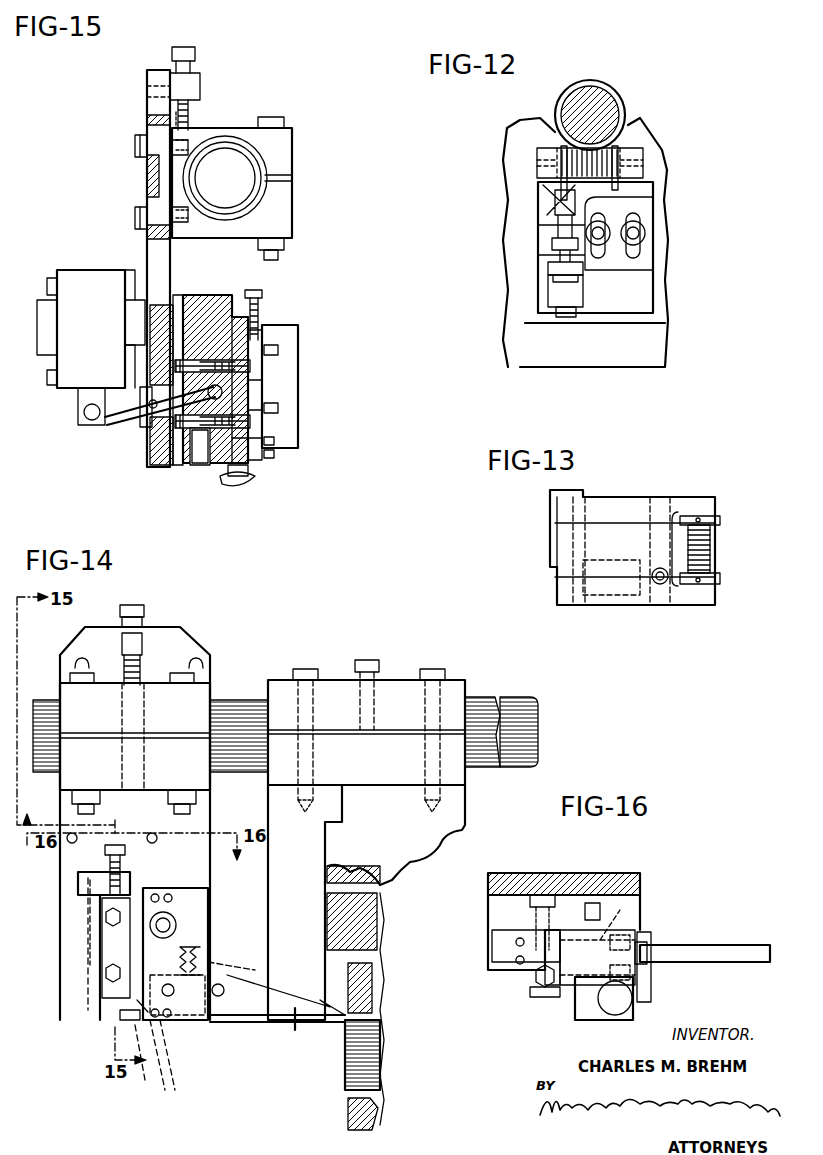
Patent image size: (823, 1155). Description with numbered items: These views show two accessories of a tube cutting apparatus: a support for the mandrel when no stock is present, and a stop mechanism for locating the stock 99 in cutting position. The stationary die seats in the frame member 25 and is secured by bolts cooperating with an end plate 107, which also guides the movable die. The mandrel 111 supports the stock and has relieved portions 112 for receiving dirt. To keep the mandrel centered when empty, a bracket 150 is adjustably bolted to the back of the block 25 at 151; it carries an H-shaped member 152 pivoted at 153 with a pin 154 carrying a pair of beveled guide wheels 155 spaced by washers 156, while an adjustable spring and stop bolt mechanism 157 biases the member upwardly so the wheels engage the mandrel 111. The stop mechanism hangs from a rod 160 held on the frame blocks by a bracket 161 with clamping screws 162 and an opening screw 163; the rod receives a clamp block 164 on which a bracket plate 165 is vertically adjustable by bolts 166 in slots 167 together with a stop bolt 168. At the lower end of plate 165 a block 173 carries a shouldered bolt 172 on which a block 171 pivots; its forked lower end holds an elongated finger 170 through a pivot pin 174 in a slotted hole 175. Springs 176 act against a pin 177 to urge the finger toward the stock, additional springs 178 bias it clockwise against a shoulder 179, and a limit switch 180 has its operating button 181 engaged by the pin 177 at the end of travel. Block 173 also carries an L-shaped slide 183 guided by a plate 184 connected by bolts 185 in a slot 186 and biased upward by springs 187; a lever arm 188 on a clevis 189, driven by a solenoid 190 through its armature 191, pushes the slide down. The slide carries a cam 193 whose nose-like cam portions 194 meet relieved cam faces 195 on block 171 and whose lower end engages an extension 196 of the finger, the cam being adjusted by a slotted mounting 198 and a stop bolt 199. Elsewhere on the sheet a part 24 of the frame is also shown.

In FIG. 14, the bracket 24 is at (278, 808).
In FIG. 12, the frame member 25 is at (542, 128).
In FIG. 14, the frame member 25 is at (398, 852).
In FIG. 15, the stock 99 is at (258, 472).
In FIG. 14, the stock 99 is at (350, 1060).
In FIG. 14, the end plate 107 is at (366, 965).
In FIG. 12, the mandrel 111 is at (590, 98).
In FIG. 12, the relieved portions 112 is at (605, 95).
In FIG. 12, the bracket 150 is at (640, 285).
In FIG. 13, the bracket 150 is at (552, 553).
In FIG. 12, the bolts 151 is at (605, 242).
In FIG. 13, the H-shaped member 152 is at (623, 497).
In FIG. 13, the pivot 153 is at (560, 537).
In FIG. 12, the pin 154 is at (652, 160).
In FIG. 12, the beveled guide wheels 155 is at (570, 165).
In FIG. 13, the beveled guide wheels 155 is at (720, 521).
In FIG. 13, the washers 156 is at (712, 548).
In FIG. 12, the spring and stop bolt mechanism 157 is at (545, 236).
In FIG. 15, the rod 160 is at (224, 162).
In FIG. 14, the rod 160 is at (472, 700).
In FIG. 14, the bracket 161 is at (400, 678).
In FIG. 14, the clamping screws 162 is at (303, 668).
In FIG. 14, the opening screw 163 is at (366, 660).
In FIG. 15, the clamp block 164 is at (284, 145).
In FIG. 14, the clamp block 164 is at (202, 690).
In FIG. 15, the bracket plate 165 is at (148, 74).
In FIG. 14, the bracket plate 165 is at (185, 640).
In FIG. 16, the bracket plate 165 is at (505, 880).
In FIG. 15, the bolts 166 is at (136, 146).
In FIG. 15, the slots 167 is at (152, 132).
In FIG. 15, the stop bolt 168 is at (188, 62).
In FIG. 14, the stop bolt 168 is at (135, 622).
In FIG. 15, the finger 170 is at (248, 487).
In FIG. 14, the finger 170 is at (295, 1030).
In FIG. 16, the finger 170 is at (732, 945).
In FIG. 15, the block 171 is at (240, 440).
In FIG. 14, the block 171 is at (208, 908).
In FIG. 16, the block 171 is at (640, 900).
In FIG. 14, the shouldered bolt 172 is at (170, 918).
In FIG. 16, the shouldered bolt 172 is at (590, 903).
In FIG. 15, the block 173 is at (200, 296).
In FIG. 14, the block 173 is at (210, 928).
In FIG. 16, the block 173 is at (625, 895).
In FIG. 14, the pivot pin 174 is at (172, 994).
In FIG. 14, the slotted hole 175 is at (160, 1016).
In FIG. 14, the springs 176 is at (208, 1015).
In FIG. 16, the springs 176 is at (645, 920).
In FIG. 14, the pin 177 is at (222, 994).
In FIG. 16, the pin 177 is at (650, 945).
In FIG. 14, the springs 178 is at (242, 972).
In FIG. 14, the shoulder 179 is at (172, 1072).
In FIG. 15, the limit switch 180 is at (292, 378).
In FIG. 16, the limit switch 180 is at (632, 1002).
In FIG. 16, the operating button 181 is at (652, 990).
In FIG. 15, the L-shaped slide 183 is at (238, 318).
In FIG. 14, the L-shaped slide 183 is at (80, 878).
In FIG. 16, the L-shaped slide 183 is at (532, 978).
In FIG. 15, the plate 184 is at (180, 466).
In FIG. 16, the plate 184 is at (535, 905).
In FIG. 15, the bolts 185 is at (176, 366).
In FIG. 16, the bolts 185 is at (540, 895).
In FIG. 15, the slot 186 is at (200, 442).
In FIG. 14, the springs 187 is at (88, 940).
In FIG. 15, the lever arm 188 is at (125, 410).
In FIG. 15, the clevis 189 is at (148, 450).
In FIG. 15, the solenoid 190 is at (74, 286).
In FIG. 16, the solenoid 190 is at (580, 1008).
In FIG. 15, the armature 191 is at (85, 392).
In FIG. 15, the cam 193 is at (254, 396).
In FIG. 14, the cam 193 is at (108, 953).
In FIG. 16, the cam 193 is at (560, 985).
In FIG. 14, the nose-like cam portions 194 is at (135, 998).
In FIG. 14, the relieved cam faces 195 is at (140, 1020).
In FIG. 14, the extension 196 is at (128, 1016).
In FIG. 15, the slotted mounting 198 is at (262, 386).
In FIG. 14, the slotted mounting 198 is at (108, 918).
In FIG. 15, the stop bolt 199 is at (260, 318).
In FIG. 14, the stop bolt 199 is at (125, 855).